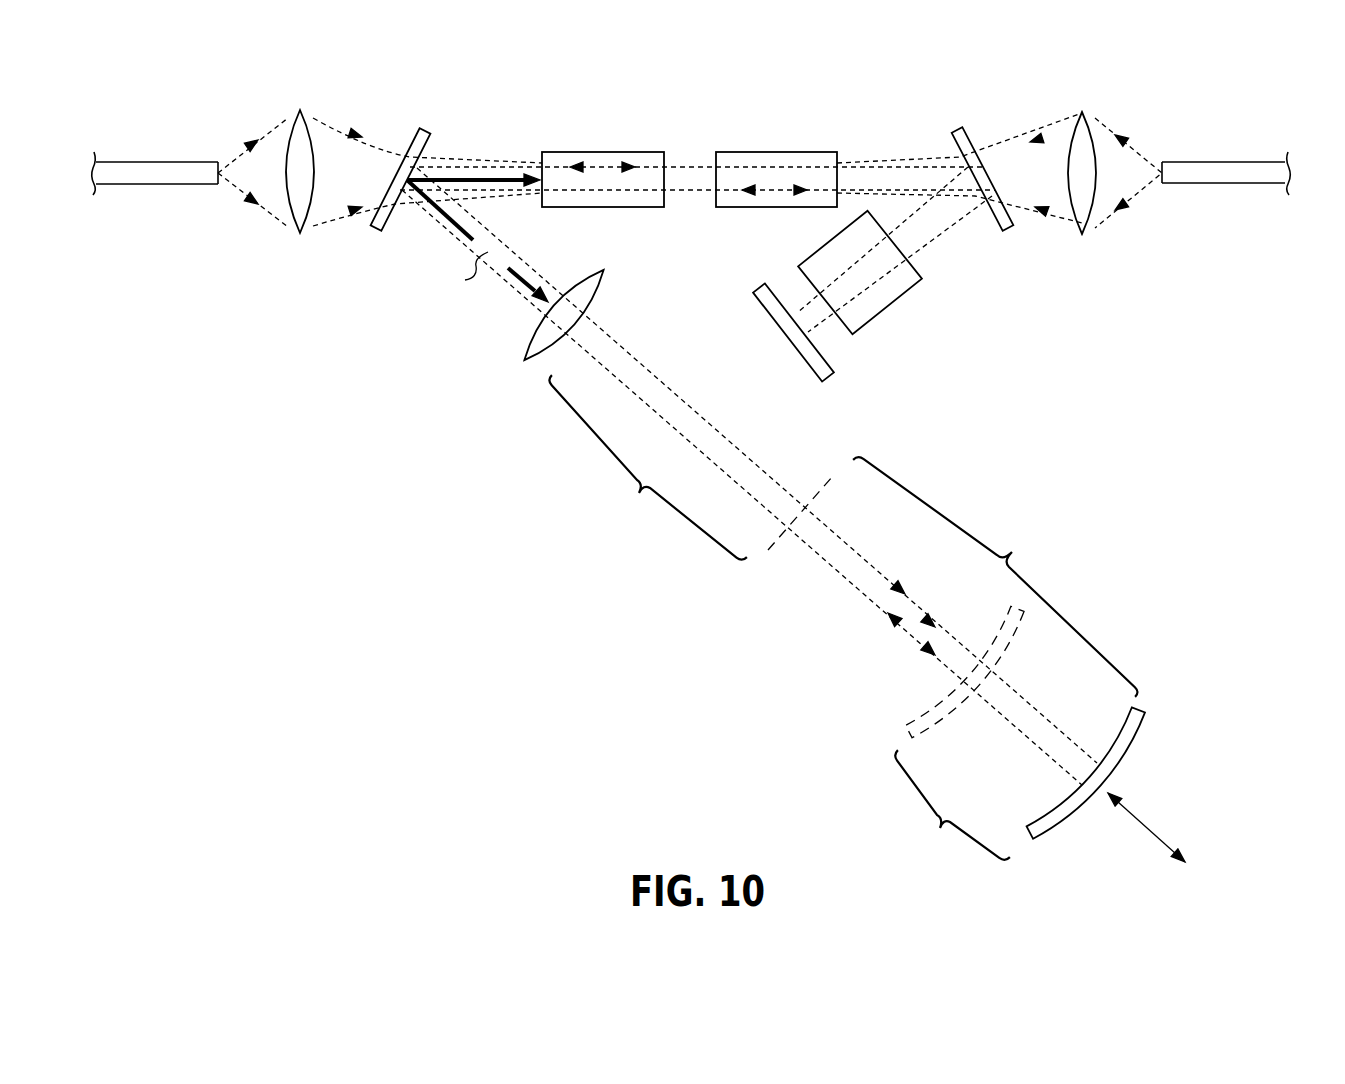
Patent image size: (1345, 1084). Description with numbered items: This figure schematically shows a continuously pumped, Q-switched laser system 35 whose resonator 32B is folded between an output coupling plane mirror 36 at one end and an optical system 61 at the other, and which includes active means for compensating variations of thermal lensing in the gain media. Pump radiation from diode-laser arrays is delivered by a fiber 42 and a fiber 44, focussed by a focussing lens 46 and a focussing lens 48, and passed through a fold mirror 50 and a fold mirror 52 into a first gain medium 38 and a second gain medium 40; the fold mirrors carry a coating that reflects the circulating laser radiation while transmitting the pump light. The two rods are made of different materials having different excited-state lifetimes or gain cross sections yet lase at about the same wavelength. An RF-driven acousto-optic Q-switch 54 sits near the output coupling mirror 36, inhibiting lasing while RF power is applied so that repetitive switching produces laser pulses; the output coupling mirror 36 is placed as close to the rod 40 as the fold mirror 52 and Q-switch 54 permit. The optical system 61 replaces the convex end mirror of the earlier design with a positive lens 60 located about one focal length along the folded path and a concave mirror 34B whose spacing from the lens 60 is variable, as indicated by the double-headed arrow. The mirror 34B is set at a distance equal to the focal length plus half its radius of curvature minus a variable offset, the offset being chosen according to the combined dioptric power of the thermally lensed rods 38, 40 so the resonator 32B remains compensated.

The laser system 35 is at (446, 557).
The fiber 42 is at (178, 162).
The fiber 44 is at (1205, 162).
The focussing lens 46 is at (283, 143).
The focussing lens 48 is at (1092, 137).
The fold mirror 50 is at (408, 128).
The fold mirror 52 is at (977, 130).
The first gain medium 38 is at (585, 150).
The second gain medium 40 is at (730, 150).
The acousto-optic Q-switch 54 is at (892, 303).
The output coupling mirror 36 is at (830, 377).
The positive lens 60 is at (525, 357).
The optical system 61 is at (754, 591).
The concave mirror 34B is at (1142, 743).
The resonator 32B is at (713, 147).